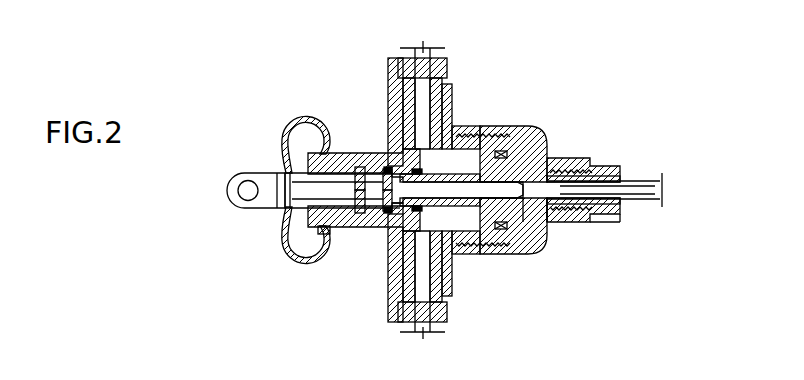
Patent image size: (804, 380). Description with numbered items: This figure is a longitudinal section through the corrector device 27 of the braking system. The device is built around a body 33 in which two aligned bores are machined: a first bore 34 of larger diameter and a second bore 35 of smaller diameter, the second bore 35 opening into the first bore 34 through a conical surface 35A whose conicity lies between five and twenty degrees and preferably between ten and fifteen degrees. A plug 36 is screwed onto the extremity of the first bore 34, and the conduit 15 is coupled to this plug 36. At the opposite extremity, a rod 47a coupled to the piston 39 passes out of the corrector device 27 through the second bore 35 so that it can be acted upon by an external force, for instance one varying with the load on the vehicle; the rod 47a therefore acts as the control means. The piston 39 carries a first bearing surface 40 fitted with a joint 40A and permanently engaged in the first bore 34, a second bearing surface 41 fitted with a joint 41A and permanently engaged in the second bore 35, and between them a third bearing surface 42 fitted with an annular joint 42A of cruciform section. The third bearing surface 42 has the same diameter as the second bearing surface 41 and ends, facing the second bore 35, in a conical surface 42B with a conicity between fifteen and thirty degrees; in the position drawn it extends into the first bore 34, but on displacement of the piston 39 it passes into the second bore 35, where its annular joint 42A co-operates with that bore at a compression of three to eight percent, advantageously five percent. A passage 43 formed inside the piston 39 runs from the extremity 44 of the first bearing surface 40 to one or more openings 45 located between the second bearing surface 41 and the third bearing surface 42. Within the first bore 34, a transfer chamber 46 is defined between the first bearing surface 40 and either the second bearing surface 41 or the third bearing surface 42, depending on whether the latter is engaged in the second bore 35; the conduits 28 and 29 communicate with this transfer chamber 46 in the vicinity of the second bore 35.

The conduit 15 is at (648, 181).
The corrector device 27 is at (597, 218).
The conduit 28 is at (441, 83).
The conduit 29 is at (427, 307).
The body 33 is at (366, 173).
The first bore 34 is at (452, 141).
The second bore 35 is at (288, 235).
The conical surface 35A is at (410, 166).
The plug 36 is at (570, 158).
The piston 39 is at (492, 156).
The first bearing surface 40 is at (543, 233).
The joint 40A is at (503, 228).
The second bearing surface 41 is at (352, 170).
The joint 41A is at (360, 167).
The third bearing surface 42 is at (430, 213).
The annular joint 42A is at (397, 250).
The conical surface 42B is at (398, 233).
The passage 43 is at (522, 173).
The extremity 44 is at (550, 223).
The opening 45 is at (320, 230).
The transfer chamber 46 is at (458, 153).
The rod 47a is at (263, 173).